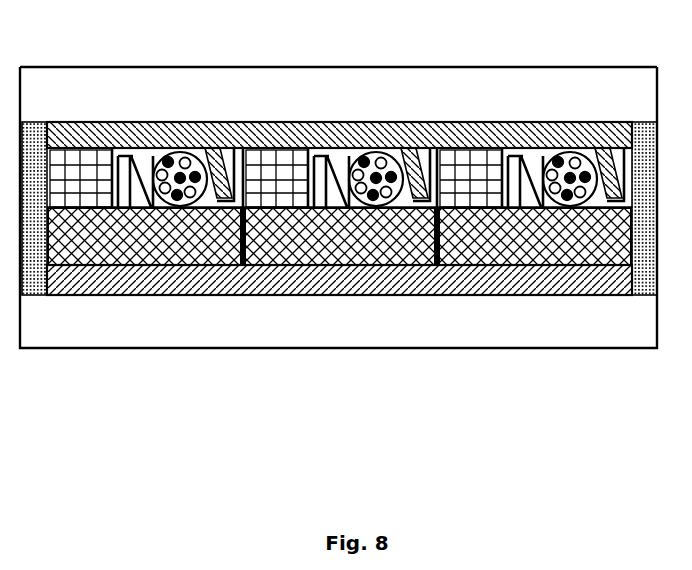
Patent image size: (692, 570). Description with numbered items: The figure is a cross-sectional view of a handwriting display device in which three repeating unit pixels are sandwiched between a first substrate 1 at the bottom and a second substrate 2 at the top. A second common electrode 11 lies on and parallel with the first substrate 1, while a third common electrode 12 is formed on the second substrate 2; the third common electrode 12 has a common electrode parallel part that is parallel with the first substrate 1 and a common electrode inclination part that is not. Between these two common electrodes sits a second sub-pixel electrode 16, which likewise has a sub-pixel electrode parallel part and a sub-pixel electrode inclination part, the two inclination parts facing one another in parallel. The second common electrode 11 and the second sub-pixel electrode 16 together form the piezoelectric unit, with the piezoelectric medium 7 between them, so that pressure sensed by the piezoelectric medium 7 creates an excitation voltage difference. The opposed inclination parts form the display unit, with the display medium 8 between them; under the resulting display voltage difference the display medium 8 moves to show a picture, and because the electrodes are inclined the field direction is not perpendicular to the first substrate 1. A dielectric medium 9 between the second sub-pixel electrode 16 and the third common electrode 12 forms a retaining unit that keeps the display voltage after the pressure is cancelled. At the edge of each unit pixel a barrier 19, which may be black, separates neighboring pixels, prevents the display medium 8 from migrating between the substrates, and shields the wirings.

The first substrate 1 is at (542, 323).
The second substrate 2 is at (345, 87).
The piezoelectric medium 7 is at (90, 243).
The display medium 8 is at (192, 173).
The dielectric medium 9 is at (85, 170).
The second common electrode 11 is at (215, 283).
The third common electrode 12 is at (405, 137).
The second sub-pixel electrode 16 is at (302, 202).
The barrier 19 is at (638, 293).